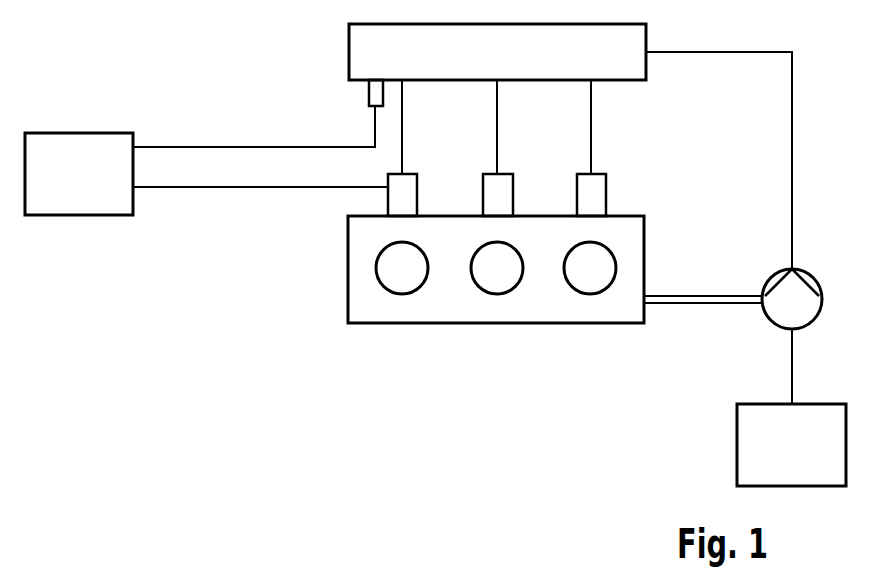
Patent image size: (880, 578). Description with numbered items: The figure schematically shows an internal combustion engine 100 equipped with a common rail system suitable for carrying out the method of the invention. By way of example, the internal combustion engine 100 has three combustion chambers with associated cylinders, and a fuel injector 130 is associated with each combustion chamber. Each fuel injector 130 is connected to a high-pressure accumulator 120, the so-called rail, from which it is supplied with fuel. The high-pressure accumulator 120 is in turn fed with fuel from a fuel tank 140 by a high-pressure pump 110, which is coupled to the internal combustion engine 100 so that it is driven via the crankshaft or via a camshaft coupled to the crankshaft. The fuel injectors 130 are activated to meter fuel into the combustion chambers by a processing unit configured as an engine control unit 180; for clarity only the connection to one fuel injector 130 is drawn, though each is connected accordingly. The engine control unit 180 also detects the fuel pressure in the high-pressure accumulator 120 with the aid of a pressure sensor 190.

The internal combustion engine 100 is at (348, 268).
The high-pressure pump 110 is at (775, 270).
The high-pressure accumulator 120 is at (349, 48).
The fuel injector 130 is at (606, 194).
The fuel tank 140 is at (737, 445).
The engine control unit 180 is at (79, 133).
The pressure sensor 190 is at (368, 97).